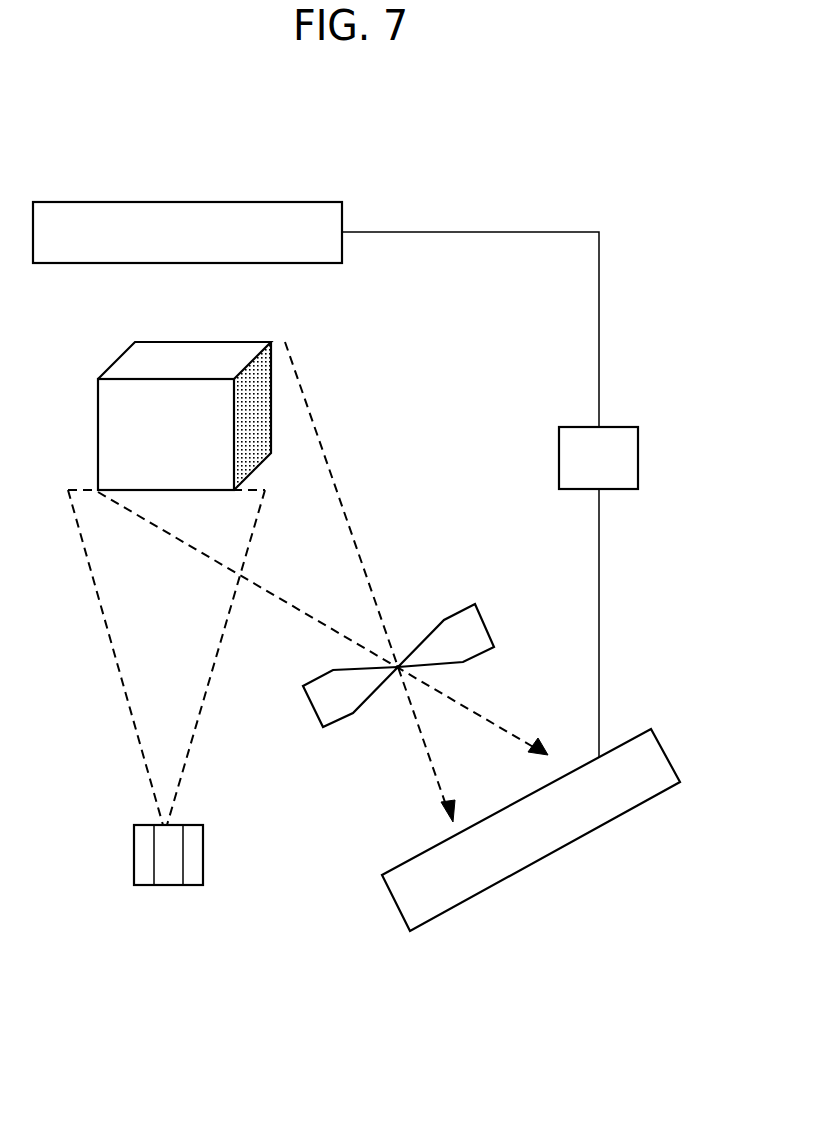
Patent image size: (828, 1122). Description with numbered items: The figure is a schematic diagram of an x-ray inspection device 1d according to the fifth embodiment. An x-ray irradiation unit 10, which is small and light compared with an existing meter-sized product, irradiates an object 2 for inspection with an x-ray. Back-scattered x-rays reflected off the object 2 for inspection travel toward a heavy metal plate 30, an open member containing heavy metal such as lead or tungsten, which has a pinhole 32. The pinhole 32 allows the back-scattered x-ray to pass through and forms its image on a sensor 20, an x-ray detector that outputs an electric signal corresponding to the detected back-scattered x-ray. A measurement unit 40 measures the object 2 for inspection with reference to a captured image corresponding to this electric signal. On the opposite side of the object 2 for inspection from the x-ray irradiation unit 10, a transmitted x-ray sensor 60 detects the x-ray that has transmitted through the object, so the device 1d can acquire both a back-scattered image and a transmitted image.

The x-ray inspection device 1d is at (656, 232).
The object for inspection 2 is at (237, 342).
The x-ray irradiation unit 10 is at (203, 856).
The sensor 20 is at (664, 752).
The heavy metal plate 30 is at (476, 604).
The pinhole 32 is at (402, 660).
The measurement unit 40 is at (616, 427).
The transmitted x-ray sensor 60 is at (343, 222).